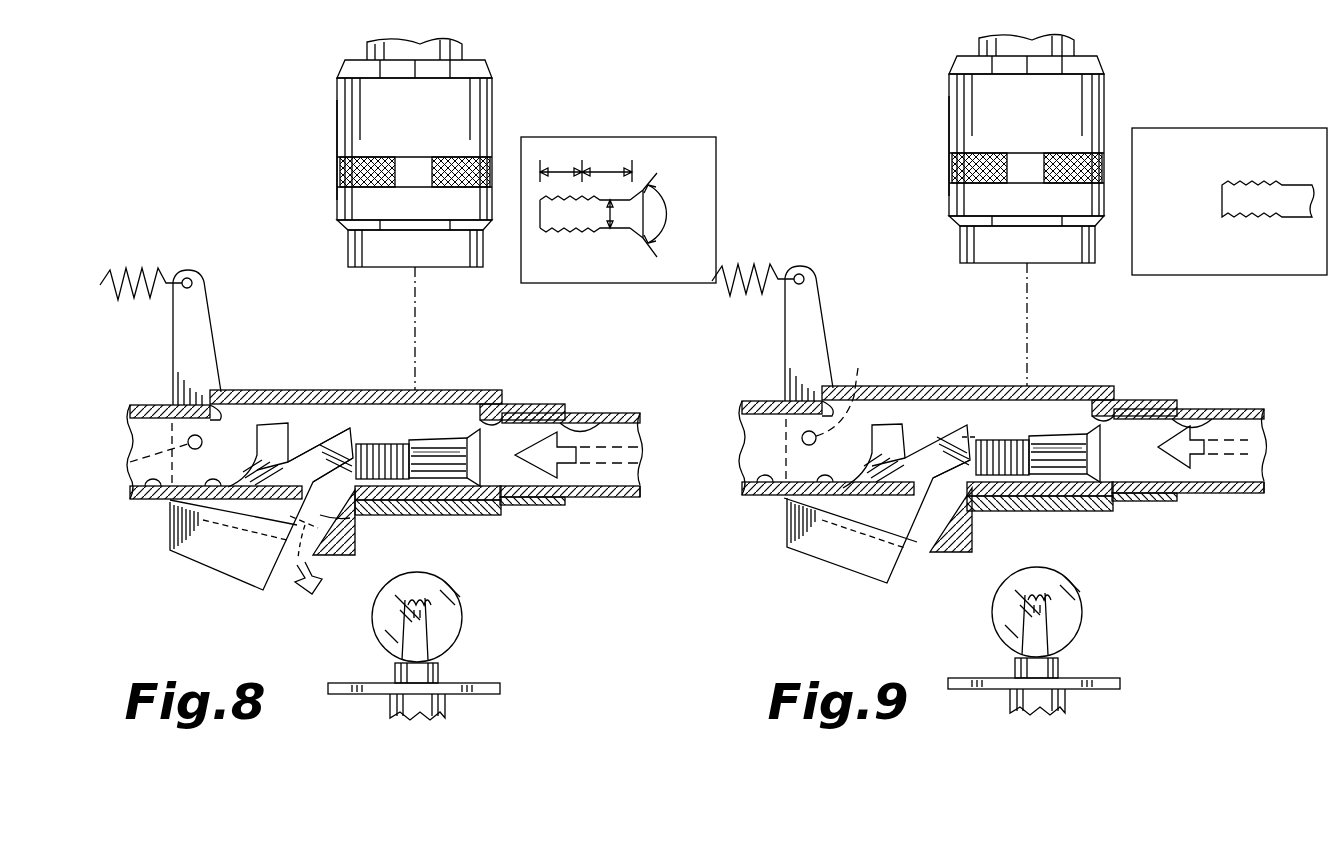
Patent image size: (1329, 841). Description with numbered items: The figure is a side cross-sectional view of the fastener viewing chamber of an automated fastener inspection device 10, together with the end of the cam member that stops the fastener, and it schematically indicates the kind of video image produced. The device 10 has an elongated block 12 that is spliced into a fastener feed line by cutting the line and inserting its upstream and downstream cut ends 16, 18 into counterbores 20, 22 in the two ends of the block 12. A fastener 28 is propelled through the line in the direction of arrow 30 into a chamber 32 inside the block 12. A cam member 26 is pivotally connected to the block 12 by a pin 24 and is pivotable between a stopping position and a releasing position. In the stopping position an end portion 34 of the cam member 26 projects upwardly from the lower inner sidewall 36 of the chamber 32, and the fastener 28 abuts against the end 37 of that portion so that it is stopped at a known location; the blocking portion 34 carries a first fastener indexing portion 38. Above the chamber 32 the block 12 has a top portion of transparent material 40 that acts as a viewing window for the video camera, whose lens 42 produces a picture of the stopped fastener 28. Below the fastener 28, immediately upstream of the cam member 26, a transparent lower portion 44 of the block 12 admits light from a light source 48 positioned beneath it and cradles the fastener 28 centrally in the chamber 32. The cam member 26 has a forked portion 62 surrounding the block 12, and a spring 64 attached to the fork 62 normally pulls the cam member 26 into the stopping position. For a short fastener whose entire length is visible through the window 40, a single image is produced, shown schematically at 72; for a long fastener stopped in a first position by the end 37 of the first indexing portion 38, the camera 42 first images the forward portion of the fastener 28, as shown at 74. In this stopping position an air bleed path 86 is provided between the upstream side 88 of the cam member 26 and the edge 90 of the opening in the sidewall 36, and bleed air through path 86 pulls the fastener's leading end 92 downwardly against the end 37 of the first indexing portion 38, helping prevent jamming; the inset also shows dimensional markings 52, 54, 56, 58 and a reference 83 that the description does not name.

In FIG. 8, the automated fastener inspection device 10 is at (529, 74).
In FIG. 9, the automated fastener inspection device 10 is at (1114, 211).
In FIG. 8, the block 12 is at (565, 405).
In FIG. 9, the block 12 is at (968, 393).
In FIG. 8, the upstream cut end 16 is at (628, 412).
In FIG. 9, the upstream cut end 16 is at (1193, 423).
In FIG. 8, the downstream cut end 18 is at (150, 402).
In FIG. 9, the downstream cut end 18 is at (778, 417).
In FIG. 8, the counterbore 20 is at (590, 420).
In FIG. 9, the counterbore 20 is at (1207, 387).
In FIG. 8, the counterbore 22 is at (137, 498).
In FIG. 9, the counterbore 22 is at (807, 502).
In FIG. 8, the pin 24 is at (132, 462).
In FIG. 9, the pin 24 is at (832, 410).
In FIG. 8, the cam member 26 is at (199, 572).
In FIG. 9, the cam member 26 is at (856, 513).
In FIG. 8, the fastener 28 is at (455, 448).
In FIG. 9, the fastener 28 is at (1061, 406).
In FIG. 8, the arrow 30 is at (570, 480).
In FIG. 9, the arrow 30 is at (1231, 420).
In FIG. 8, the chamber 32 is at (425, 425).
In FIG. 9, the chamber 32 is at (1065, 389).
In FIG. 8, the end portion of the cam member 34 is at (262, 522).
In FIG. 9, the end portion of the cam member 34 is at (903, 529).
In FIG. 8, the lower inner sidewall 36 is at (198, 505).
In FIG. 9, the lower inner sidewall 36 is at (924, 518).
In FIG. 9, the end of cam member portion 37 is at (994, 395).
In FIG. 8, the first fastener indexing portion 38 is at (332, 445).
In FIG. 9, the first fastener indexing portion 38 is at (929, 415).
In FIG. 8, the transparent material 40 is at (525, 405).
In FIG. 9, the transparent material 40 is at (1134, 410).
In FIG. 8, the video camera lens 42 is at (345, 118).
In FIG. 9, the video camera lens 42 is at (921, 146).
In FIG. 8, the transparent lower portion 44 is at (480, 515).
In FIG. 9, the transparent lower portion 44 is at (1072, 518).
In FIG. 8, the light source 48 is at (462, 617).
In FIG. 9, the light source 48 is at (1047, 641).
In FIG. 8, the thread length 52 is at (560, 160).
In FIG. 8, the shank length 54 is at (607, 160).
In FIG. 8, the diameter 56 is at (607, 222).
In FIG. 8, the head angle 58 is at (665, 208).
In FIG. 8, the forked portion 62 is at (212, 320).
In FIG. 9, the forked portion 62 is at (832, 333).
In FIG. 8, the spring 64 is at (148, 263).
In FIG. 9, the spring 64 is at (763, 256).
In FIG. 8, the single video image 72 is at (650, 137).
In FIG. 9, the video image of forward portion 74 is at (1229, 175).
In FIG. 8, the channel 83 is at (325, 520).
In FIG. 8, the air bleed path 86 is at (320, 588).
In FIG. 8, the upstream side of the cam member 88 is at (355, 548).
In FIG. 8, the edge of the opening 90 is at (360, 518).
In FIG. 8, the leading end of the fastener 92 is at (318, 440).